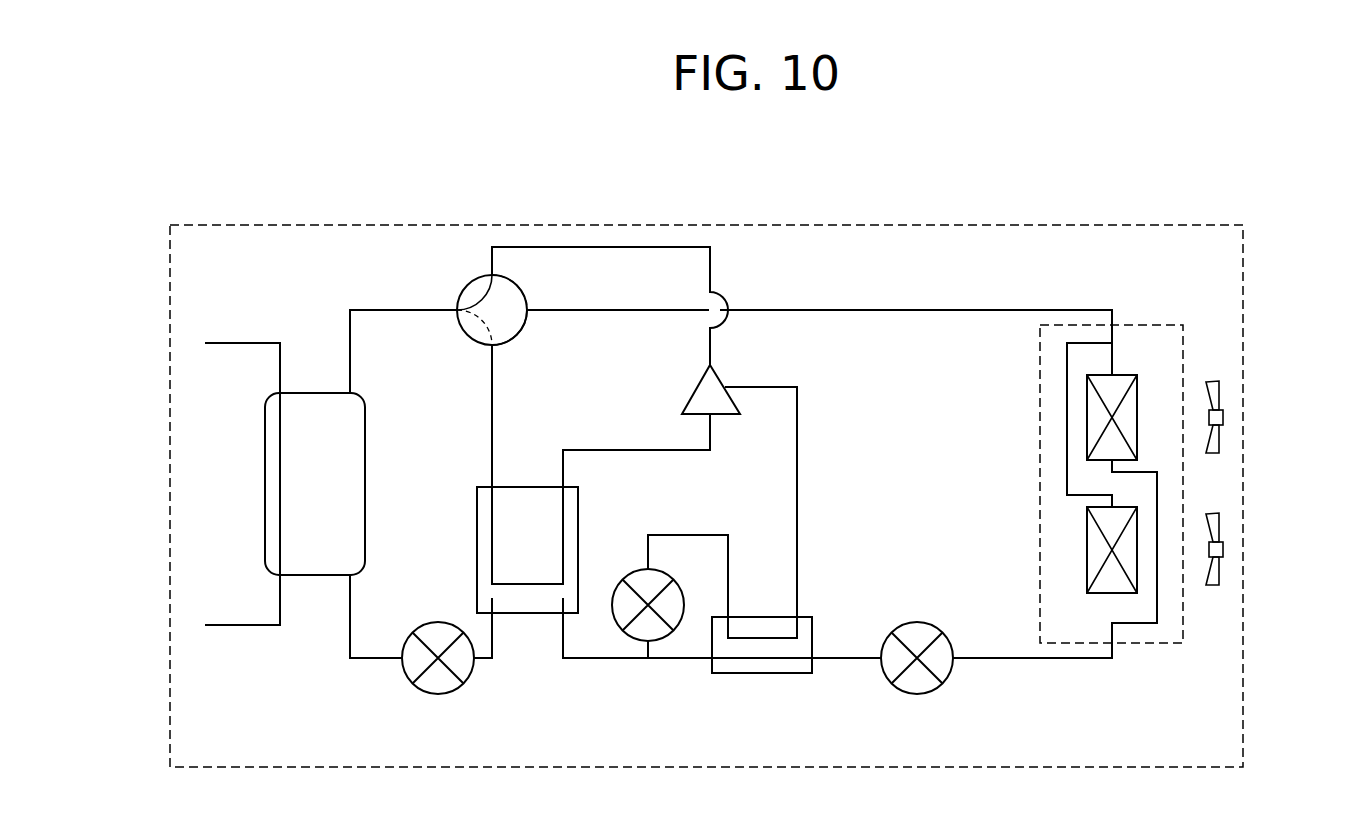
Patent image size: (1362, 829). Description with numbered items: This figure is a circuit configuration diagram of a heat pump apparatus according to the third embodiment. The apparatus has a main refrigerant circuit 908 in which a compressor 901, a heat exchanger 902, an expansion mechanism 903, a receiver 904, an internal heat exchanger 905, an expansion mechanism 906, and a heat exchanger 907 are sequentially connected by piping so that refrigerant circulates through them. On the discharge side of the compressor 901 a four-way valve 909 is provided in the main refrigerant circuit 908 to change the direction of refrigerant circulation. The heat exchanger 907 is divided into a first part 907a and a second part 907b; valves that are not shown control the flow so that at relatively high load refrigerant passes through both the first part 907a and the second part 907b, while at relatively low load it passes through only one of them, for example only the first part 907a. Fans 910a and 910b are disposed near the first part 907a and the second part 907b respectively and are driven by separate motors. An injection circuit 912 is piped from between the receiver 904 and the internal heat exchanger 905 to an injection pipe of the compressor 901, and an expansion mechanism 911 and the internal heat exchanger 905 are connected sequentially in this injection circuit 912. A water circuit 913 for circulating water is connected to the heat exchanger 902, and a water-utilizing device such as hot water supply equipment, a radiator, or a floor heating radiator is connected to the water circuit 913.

The compressor 901 is at (697, 387).
The heat exchanger 902 is at (365, 427).
The expansion mechanism 903 is at (438, 694).
The receiver 904 is at (477, 533).
The internal heat exchanger 905 is at (750, 673).
The expansion mechanism 906 is at (917, 694).
The heat exchanger 907 is at (1062, 491).
The first part 907a is at (1087, 412).
The second part 907b is at (1087, 540).
The main refrigerant circuit 908 is at (838, 308).
The four-way valve 909 is at (466, 290).
The fan 910a is at (1224, 418).
The fan 910b is at (1224, 550).
The expansion mechanism 911 is at (630, 573).
The injection circuit 912 is at (797, 532).
The water circuit 913 is at (243, 343).